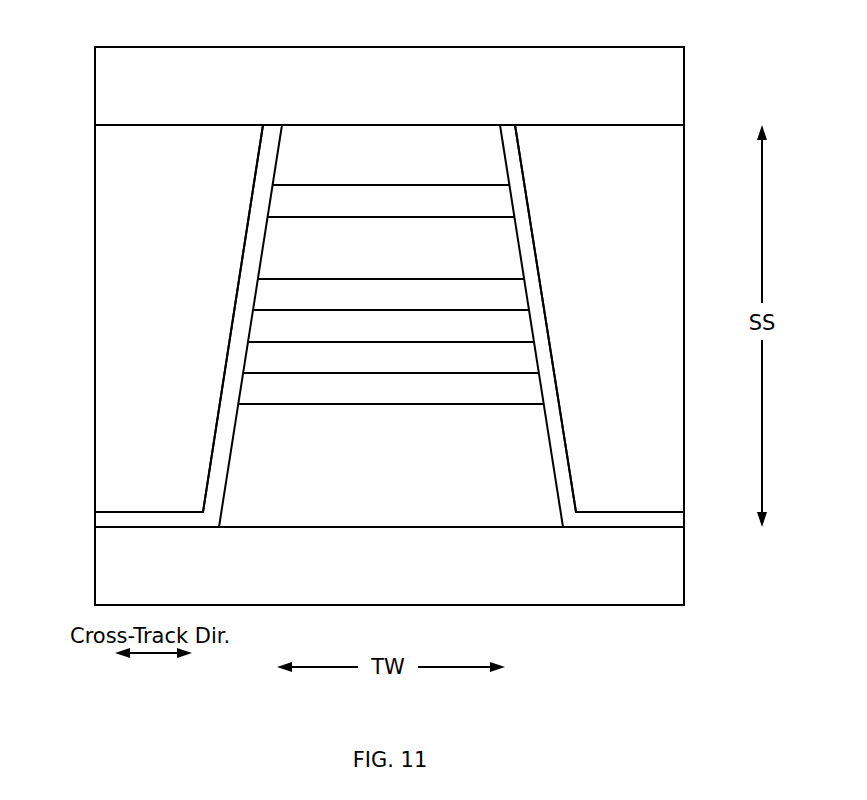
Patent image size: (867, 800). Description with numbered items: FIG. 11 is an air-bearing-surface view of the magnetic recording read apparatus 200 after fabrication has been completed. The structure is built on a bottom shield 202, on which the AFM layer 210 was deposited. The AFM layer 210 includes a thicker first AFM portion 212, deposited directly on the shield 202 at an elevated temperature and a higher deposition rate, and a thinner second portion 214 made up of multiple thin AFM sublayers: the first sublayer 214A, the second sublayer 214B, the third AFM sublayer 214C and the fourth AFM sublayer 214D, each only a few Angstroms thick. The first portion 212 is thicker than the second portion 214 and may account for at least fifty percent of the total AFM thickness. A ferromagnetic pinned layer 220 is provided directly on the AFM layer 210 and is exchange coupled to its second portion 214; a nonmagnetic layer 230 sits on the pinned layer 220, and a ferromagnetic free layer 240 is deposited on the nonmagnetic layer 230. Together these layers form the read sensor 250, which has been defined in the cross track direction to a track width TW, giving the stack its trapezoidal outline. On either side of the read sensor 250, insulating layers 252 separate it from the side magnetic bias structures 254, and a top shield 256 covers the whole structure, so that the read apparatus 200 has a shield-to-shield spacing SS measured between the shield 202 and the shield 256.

The magnetic recording read apparatus 200 is at (370, 28).
The shield 256 is at (389, 86).
The shield 202 is at (389, 566).
The side magnetic bias structures 254 is at (389, 318).
The insulating layers 252 is at (95, 520).
The AFM layer 210 is at (588, 401).
The free layer 240 is at (391, 155).
The nonmagnetic layer 230 is at (391, 201).
The pinned layer 220 is at (391, 248).
The second portion of the AFM layer 214 is at (205, 342).
The fourth AFM sublayer 214D is at (391, 294).
The third AFM sublayer 214C is at (391, 326).
The second sublayer 214B is at (391, 357).
The first sublayer 214A is at (390, 388).
The first AFM portion 212 is at (391, 465).
The read sensor 250 is at (484, 556).